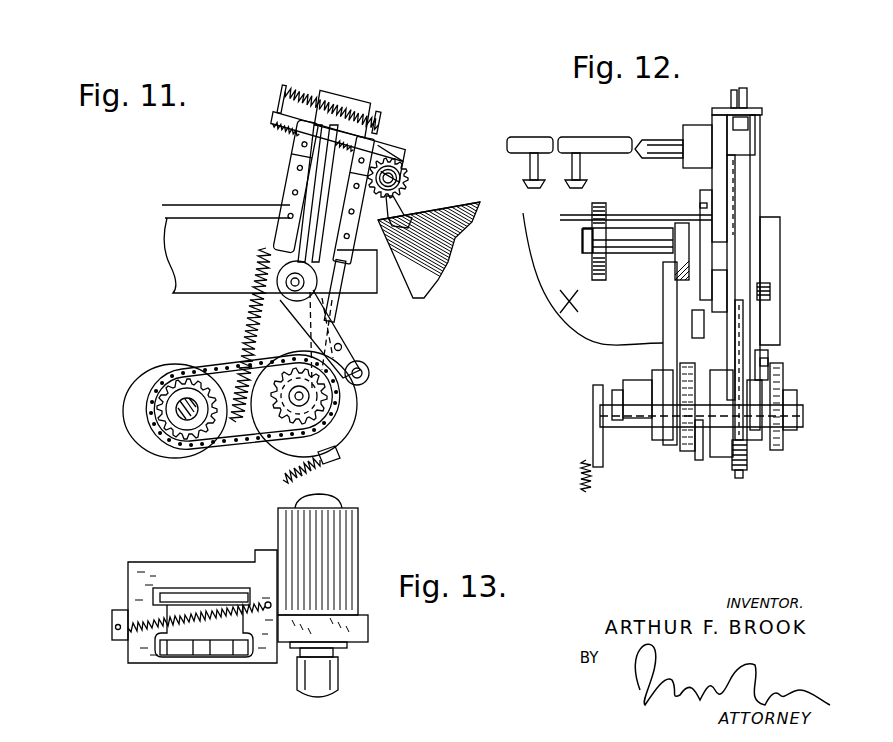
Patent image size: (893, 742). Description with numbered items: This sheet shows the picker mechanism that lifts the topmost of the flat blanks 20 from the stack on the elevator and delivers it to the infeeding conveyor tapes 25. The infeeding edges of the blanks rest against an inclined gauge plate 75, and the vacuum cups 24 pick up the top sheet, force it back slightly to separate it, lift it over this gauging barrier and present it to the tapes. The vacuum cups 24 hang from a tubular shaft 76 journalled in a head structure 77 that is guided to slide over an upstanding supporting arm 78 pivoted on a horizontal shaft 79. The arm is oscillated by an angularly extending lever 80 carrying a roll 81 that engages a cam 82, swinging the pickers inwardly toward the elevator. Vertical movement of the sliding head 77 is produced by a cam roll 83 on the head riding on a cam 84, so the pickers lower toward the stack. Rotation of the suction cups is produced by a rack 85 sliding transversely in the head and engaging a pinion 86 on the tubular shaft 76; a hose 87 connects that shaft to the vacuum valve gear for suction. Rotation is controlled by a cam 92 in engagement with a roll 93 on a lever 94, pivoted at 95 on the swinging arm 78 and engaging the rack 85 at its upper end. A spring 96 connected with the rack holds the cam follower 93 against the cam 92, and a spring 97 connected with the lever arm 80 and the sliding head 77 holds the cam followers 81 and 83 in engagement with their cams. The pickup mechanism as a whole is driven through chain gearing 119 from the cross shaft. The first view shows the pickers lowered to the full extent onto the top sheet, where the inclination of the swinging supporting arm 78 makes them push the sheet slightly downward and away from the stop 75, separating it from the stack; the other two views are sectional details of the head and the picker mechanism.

In FIG. 11, the flat blanks 20 is at (458, 205).
In FIG. 11, the vacuum cups 24 is at (406, 213).
In FIG. 12, the vacuum cups 24 is at (578, 189).
In FIG. 11, the tapes 25 is at (190, 205).
In FIG. 11, the inclined gauge plate 75 is at (400, 290).
In FIG. 12, the inclined gauge plate 75 is at (593, 279).
In FIG. 11, the tubular shaft 76 is at (394, 172).
In FIG. 12, the tubular shaft 76 is at (580, 139).
In FIG. 13, the tubular shaft 76 is at (338, 505).
In FIG. 11, the head structure 77 is at (385, 135).
In FIG. 12, the head structure 77 is at (763, 128).
In FIG. 13, the head structure 77 is at (203, 560).
In FIG. 11, the supporting arm 78 is at (272, 251).
In FIG. 12, the supporting arm 78 is at (735, 252).
In FIG. 13, the supporting arm 78 is at (220, 600).
In FIG. 11, the horizontal shaft 79 is at (345, 396).
In FIG. 12, the horizontal shaft 79 is at (797, 397).
In FIG. 11, the lever 80 is at (262, 442).
In FIG. 12, the lever 80 is at (717, 459).
In FIG. 11, the roll 81 is at (237, 443).
In FIG. 12, the roll 81 is at (748, 452).
In FIG. 11, the cam 82 is at (172, 455).
In FIG. 12, the cam 82 is at (741, 479).
In FIG. 11, the cam roll 83 is at (346, 346).
In FIG. 12, the cam roll 83 is at (692, 322).
In FIG. 11, the cam 84 is at (350, 430).
In FIG. 12, the cam 84 is at (693, 455).
In FIG. 11, the rack 85 is at (272, 112).
In FIG. 12, the rack 85 is at (748, 140).
In FIG. 13, the rack 85 is at (368, 632).
In FIG. 11, the pinion 86 is at (406, 166).
In FIG. 13, the pinion 86 is at (347, 645).
In FIG. 13, the hose 87 is at (338, 683).
In FIG. 11, the cam 92 is at (340, 406).
In FIG. 12, the cam 92 is at (769, 356).
In FIG. 11, the roll 93 is at (369, 373).
In FIG. 12, the roll 93 is at (770, 362).
In FIG. 11, the lever 94 is at (330, 324).
In FIG. 12, the lever 94 is at (745, 335).
In FIG. 13, the lever 94 is at (222, 648).
In FIG. 11, the pivot 95 is at (285, 281).
In FIG. 12, the pivot 95 is at (772, 291).
In FIG. 11, the spring 96 is at (328, 95).
In FIG. 12, the spring 96 is at (717, 92).
In FIG. 13, the spring 96 is at (137, 618).
In FIG. 11, the spring 97 is at (254, 321).
In FIG. 11, the chain gearing 119 is at (238, 366).
In FIG. 12, the chain gearing 119 is at (788, 442).